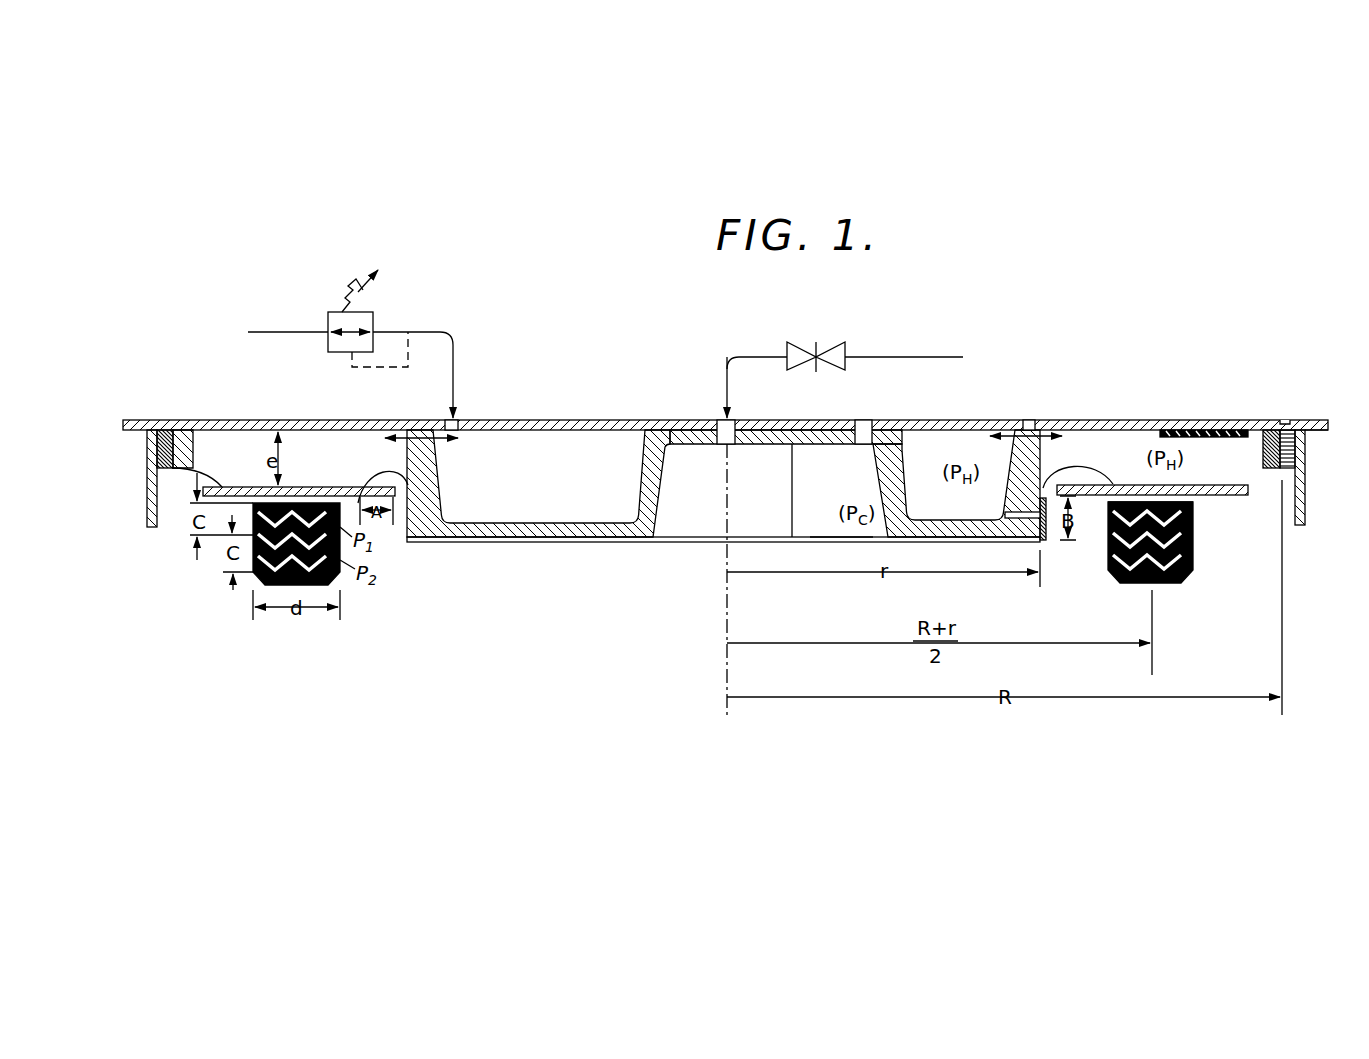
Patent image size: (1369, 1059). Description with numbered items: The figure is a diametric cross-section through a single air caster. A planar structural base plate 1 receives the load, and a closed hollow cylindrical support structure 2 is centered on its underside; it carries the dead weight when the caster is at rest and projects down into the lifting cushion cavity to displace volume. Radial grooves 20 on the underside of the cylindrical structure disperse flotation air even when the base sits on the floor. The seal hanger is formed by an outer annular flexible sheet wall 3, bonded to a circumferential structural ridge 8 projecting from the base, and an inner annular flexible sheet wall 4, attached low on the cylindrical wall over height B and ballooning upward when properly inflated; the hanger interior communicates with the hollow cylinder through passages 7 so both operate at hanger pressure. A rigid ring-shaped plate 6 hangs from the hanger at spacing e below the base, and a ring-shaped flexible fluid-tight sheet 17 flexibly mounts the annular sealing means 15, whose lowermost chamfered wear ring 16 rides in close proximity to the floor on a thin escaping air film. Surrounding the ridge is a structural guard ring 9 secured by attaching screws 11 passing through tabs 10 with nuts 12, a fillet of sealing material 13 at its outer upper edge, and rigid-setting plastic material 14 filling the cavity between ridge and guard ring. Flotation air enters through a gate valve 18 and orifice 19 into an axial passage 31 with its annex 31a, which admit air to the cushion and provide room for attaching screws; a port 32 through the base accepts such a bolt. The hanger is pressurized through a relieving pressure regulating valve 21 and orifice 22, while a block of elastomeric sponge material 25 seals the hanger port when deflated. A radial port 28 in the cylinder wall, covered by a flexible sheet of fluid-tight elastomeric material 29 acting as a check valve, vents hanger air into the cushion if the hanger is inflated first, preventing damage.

The planar structural base plate 1 is at (1085, 418).
The closed hollow cylindrical support structure 2 is at (638, 485).
The outer annular flexible sheet wall 3 is at (1260, 470).
The inner annular flexible sheet wall 4 is at (1090, 467).
The rigid ring-shaped plate 6 is at (1236, 495).
The passages 7 is at (425, 437).
The circumferential structural ridge 8 is at (187, 450).
The structural guard ring 9 is at (1306, 498).
The tab 10 is at (1263, 450).
The attaching screw 11 is at (1283, 420).
The nut 12 is at (1293, 455).
The fillet of sealing material 13 is at (1312, 431).
The rigid-setting plastic material 14 is at (172, 468).
The annular sealing means 15 is at (1195, 553).
The wear ring 16 is at (253, 580).
The ring-shaped flexible fluid-tight sheet 17 is at (1090, 495).
The gate valve 18 is at (816, 342).
The orifice 19 is at (720, 425).
The radial grooves 20 is at (545, 542).
The pressure regulating valve 21 is at (338, 312).
The orifice 22 is at (458, 423).
The block of elastomeric sponge material 25 is at (1155, 430).
The radial port 28 is at (1030, 514).
The flexible sheet of fluid-tight elastomeric material 29 is at (1045, 538).
The axial passage 31 is at (733, 490).
The annex 31a is at (840, 509).
The port 32 is at (862, 430).